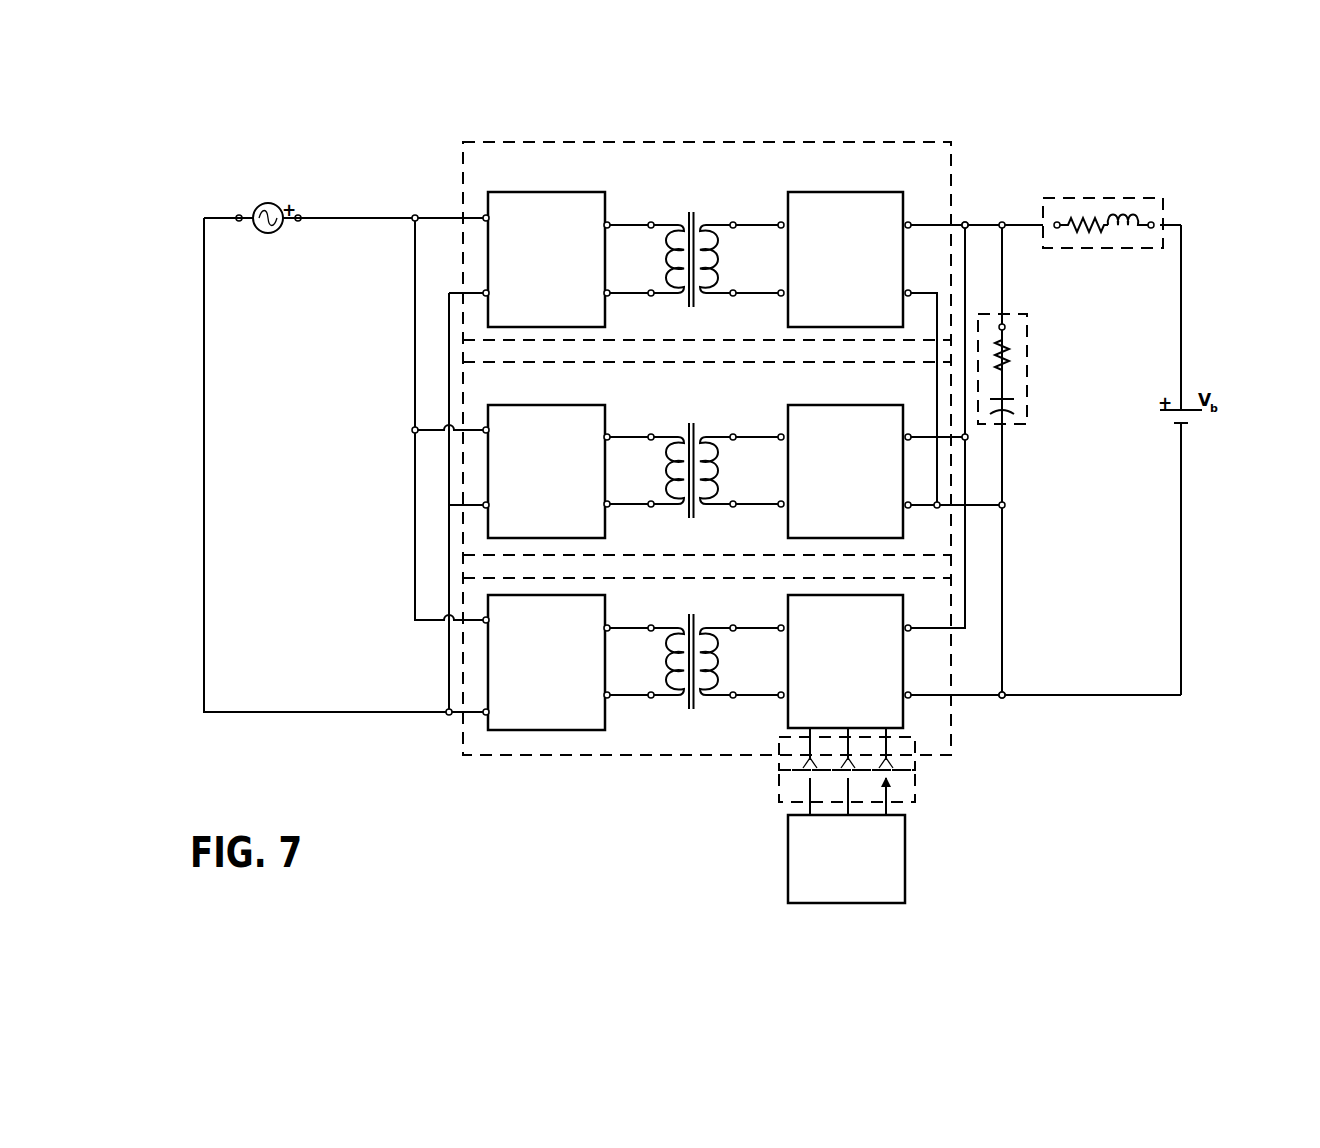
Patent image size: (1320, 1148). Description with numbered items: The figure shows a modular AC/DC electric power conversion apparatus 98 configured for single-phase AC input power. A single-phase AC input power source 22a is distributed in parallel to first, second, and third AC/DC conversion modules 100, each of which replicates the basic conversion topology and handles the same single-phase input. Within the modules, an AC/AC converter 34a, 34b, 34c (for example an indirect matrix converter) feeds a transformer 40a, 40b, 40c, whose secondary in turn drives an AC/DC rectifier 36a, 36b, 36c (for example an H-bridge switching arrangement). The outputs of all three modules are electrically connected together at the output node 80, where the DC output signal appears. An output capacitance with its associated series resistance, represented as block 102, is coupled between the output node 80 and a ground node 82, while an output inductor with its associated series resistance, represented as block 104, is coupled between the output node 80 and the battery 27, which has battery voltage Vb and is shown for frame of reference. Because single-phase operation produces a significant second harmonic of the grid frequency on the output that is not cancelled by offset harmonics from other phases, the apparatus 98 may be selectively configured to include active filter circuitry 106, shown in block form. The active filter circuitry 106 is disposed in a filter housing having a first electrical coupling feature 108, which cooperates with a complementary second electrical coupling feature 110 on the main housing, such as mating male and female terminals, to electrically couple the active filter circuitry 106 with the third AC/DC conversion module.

The single-phase AC input power source 22a is at (268, 233).
The modular AC/DC electric power conversion apparatus 98 is at (818, 127).
The AC/DC conversion module 100 is at (463, 610).
The AC/AC converter 34a is at (560, 247).
The AC/AC converter 34b is at (560, 467).
The AC/AC converter 34c is at (560, 658).
The transformer 40a is at (693, 202).
The transformer 40b is at (693, 415).
The transformer 40c is at (693, 606).
The AC/DC rectifier 36a is at (859, 247).
The AC/DC rectifier 36b is at (859, 467).
The AC/DC rectifier 36c is at (859, 658).
The output node 80 is at (965, 220).
The ground node 82 is at (1004, 698).
The output inductor 104 is at (1123, 197).
The output capacitance 102 is at (1033, 335).
The battery 27 is at (1194, 385).
The second electrical coupling feature 110 is at (918, 748).
The first electrical coupling feature 108 is at (918, 780).
The active filter circuitry 106 is at (907, 858).